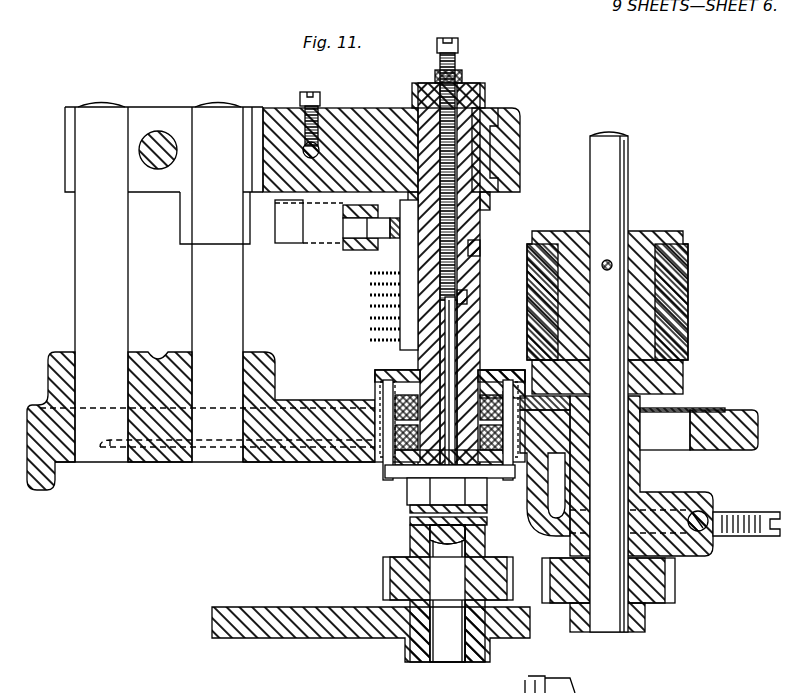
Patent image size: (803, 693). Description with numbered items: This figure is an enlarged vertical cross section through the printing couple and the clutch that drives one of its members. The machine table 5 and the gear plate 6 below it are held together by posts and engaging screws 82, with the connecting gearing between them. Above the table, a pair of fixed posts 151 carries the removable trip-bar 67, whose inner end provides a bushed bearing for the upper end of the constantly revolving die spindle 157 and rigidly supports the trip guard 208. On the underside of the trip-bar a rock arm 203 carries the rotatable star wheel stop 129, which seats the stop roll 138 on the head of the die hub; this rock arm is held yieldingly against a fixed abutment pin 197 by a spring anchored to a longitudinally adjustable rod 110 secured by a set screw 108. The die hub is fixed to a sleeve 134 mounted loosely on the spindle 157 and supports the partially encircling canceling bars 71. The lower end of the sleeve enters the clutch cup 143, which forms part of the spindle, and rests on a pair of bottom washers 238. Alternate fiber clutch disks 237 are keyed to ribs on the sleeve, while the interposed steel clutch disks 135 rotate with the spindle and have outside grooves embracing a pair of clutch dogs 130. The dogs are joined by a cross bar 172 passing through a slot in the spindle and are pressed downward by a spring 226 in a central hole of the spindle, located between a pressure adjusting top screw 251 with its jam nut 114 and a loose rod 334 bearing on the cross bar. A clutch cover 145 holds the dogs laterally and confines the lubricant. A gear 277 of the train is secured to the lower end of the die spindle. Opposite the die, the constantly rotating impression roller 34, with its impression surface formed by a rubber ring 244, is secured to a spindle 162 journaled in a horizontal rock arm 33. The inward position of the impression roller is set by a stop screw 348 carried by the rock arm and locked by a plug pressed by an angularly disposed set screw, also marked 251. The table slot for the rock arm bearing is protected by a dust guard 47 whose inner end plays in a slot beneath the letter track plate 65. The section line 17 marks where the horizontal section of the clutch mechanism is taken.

The engaging screw 82 is at (157, 134).
The set screw 108 is at (303, 94).
The adjustable rod 110 is at (313, 146).
The trip-bar 67 is at (340, 139).
The pressure adjusting top screw 251 is at (437, 60).
The jam nut 114 is at (462, 77).
The die spindle 157 is at (482, 100).
The trip guard 208 is at (521, 160).
The impression roller spindle 162 is at (618, 208).
The star wheel stop 129 is at (350, 226).
The spring 226 is at (470, 247).
The abutment pin 197 is at (287, 245).
The rock arm 203 is at (322, 245).
The stop roll 138 is at (405, 250).
The rubber ring 244 is at (689, 301).
The canceling bars 71 is at (378, 324).
The die hub sleeve 134 is at (470, 297).
The loose rod 334 is at (456, 332).
The fixed posts 151 is at (164, 283).
The clutch cover 145 is at (333, 354).
The clutch cup 143 is at (395, 372).
The letter track plate 65 is at (527, 394).
The impression roller 34 is at (684, 378).
The section line 17 is at (372, 376).
The steel clutch disks 135 is at (380, 386).
The dust guard 47 is at (715, 410).
The machine table 5 is at (744, 414).
The fiber clutch disks 237 is at (378, 404).
The clutch dogs 130 is at (388, 462).
The rock arm 33 is at (656, 495).
The cross bar 172 is at (450, 485).
The bottom washers 238 is at (408, 480).
The stop screw 348 is at (748, 512).
The gear 277 is at (383, 574).
The gear plate 6 is at (300, 616).